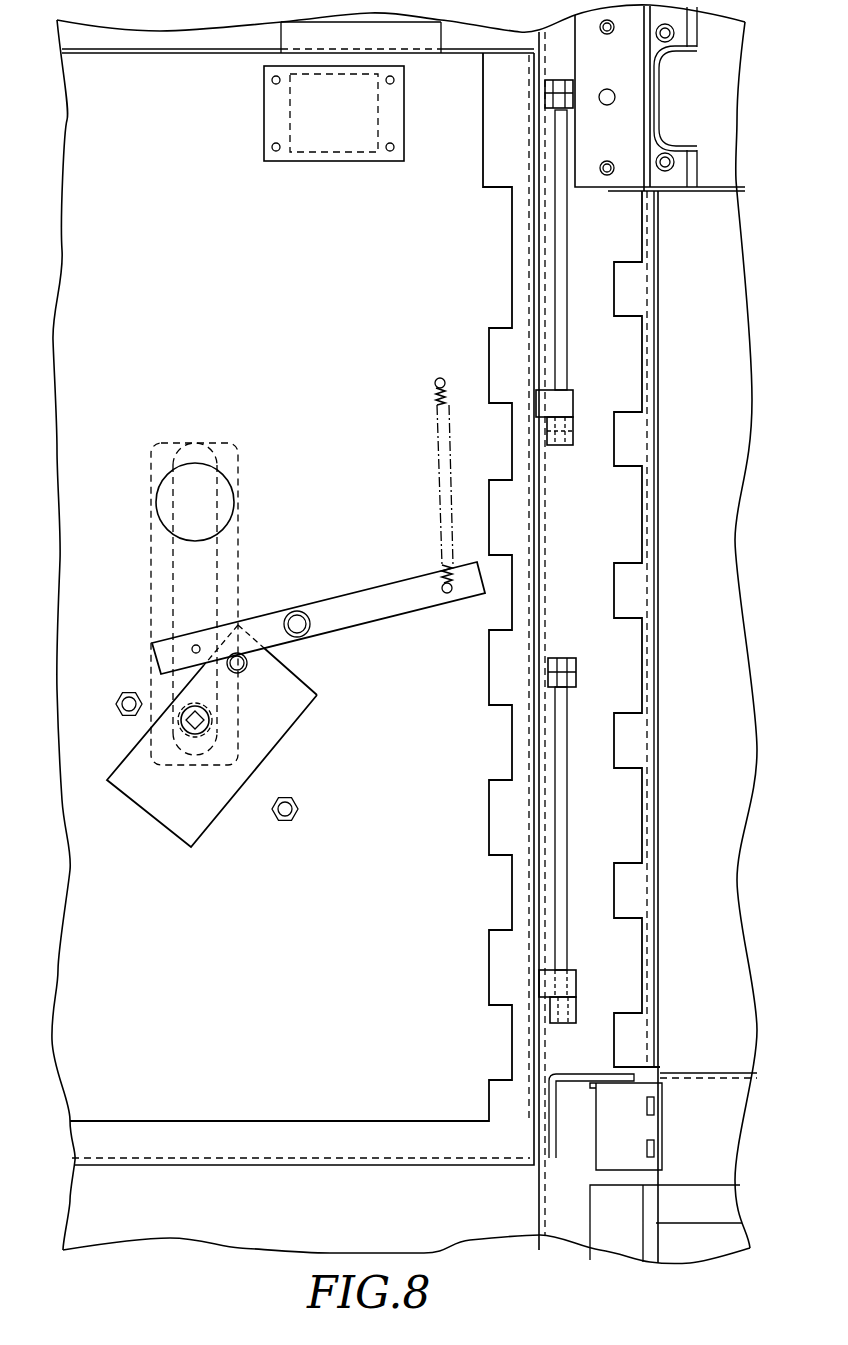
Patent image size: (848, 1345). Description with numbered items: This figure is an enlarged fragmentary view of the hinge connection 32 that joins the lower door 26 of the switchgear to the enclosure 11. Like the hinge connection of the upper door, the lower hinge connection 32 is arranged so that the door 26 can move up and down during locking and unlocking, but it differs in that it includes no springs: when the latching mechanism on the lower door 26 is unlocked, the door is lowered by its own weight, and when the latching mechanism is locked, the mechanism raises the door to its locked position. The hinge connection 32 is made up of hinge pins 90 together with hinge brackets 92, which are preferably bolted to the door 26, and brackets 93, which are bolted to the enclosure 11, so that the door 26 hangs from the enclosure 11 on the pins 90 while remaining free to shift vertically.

The enclosure 11 is at (658, 432).
The lower door 26 is at (417, 901).
The hinge connection 32 is at (571, 362).
The hinge pins 90 is at (566, 705).
The hinge brackets 92 is at (575, 405).
The brackets 93 is at (578, 1012).